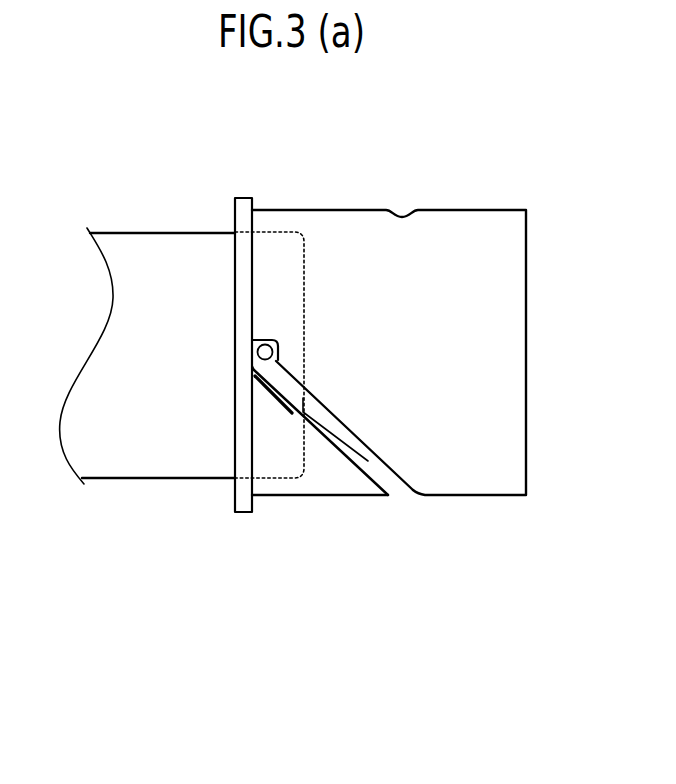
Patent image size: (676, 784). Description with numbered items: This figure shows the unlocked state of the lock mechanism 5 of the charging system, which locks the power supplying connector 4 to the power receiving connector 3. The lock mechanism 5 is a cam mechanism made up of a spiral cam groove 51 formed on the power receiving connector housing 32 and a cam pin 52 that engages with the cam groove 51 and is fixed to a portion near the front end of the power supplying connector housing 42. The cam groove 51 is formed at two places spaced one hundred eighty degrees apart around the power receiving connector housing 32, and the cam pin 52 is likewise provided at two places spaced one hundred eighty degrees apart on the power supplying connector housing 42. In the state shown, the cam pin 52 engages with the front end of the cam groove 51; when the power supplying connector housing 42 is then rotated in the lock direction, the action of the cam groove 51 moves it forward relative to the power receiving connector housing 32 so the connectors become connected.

The power receiving connector 3 is at (497, 185).
The power receiving connector housing 32 is at (353, 210).
The power supplying connector 4 is at (108, 203).
The power supplying connector housing 42 is at (200, 232).
The lock mechanism 5 is at (412, 329).
The cam groove 51 is at (345, 436).
The cam pin 52 is at (273, 352).